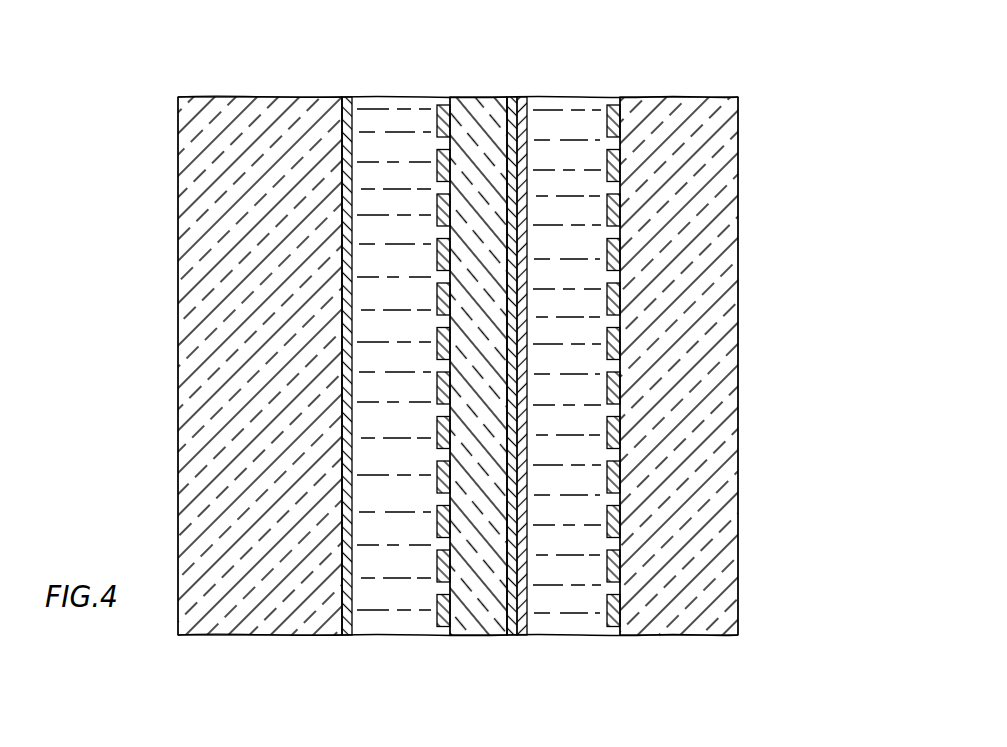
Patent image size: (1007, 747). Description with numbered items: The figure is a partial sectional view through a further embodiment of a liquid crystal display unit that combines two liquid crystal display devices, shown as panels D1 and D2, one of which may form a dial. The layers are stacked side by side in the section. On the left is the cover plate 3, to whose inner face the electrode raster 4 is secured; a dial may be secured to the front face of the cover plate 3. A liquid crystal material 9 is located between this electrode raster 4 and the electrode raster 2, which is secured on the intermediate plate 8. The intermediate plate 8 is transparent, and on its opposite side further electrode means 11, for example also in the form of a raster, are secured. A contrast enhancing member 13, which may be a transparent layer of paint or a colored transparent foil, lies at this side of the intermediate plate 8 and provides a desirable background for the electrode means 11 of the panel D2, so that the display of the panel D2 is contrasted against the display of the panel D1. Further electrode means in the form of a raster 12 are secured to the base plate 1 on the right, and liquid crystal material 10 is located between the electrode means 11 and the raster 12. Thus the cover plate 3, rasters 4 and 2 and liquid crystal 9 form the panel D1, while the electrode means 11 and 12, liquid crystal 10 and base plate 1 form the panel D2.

The base plate 1 is at (713, 325).
The electrode raster 2 is at (445, 627).
The cover plate 3 is at (195, 288).
The electrode raster 4 is at (343, 635).
The intermediate plate 8 is at (470, 108).
The liquid crystal material 9 is at (388, 620).
The liquid crystal material 10 is at (578, 623).
The electrode means 11 is at (524, 110).
The electrode raster 12 is at (613, 110).
The contrast enhancing member 13 is at (512, 108).
The panel D1 is at (299, 93).
The panel D2 is at (778, 187).